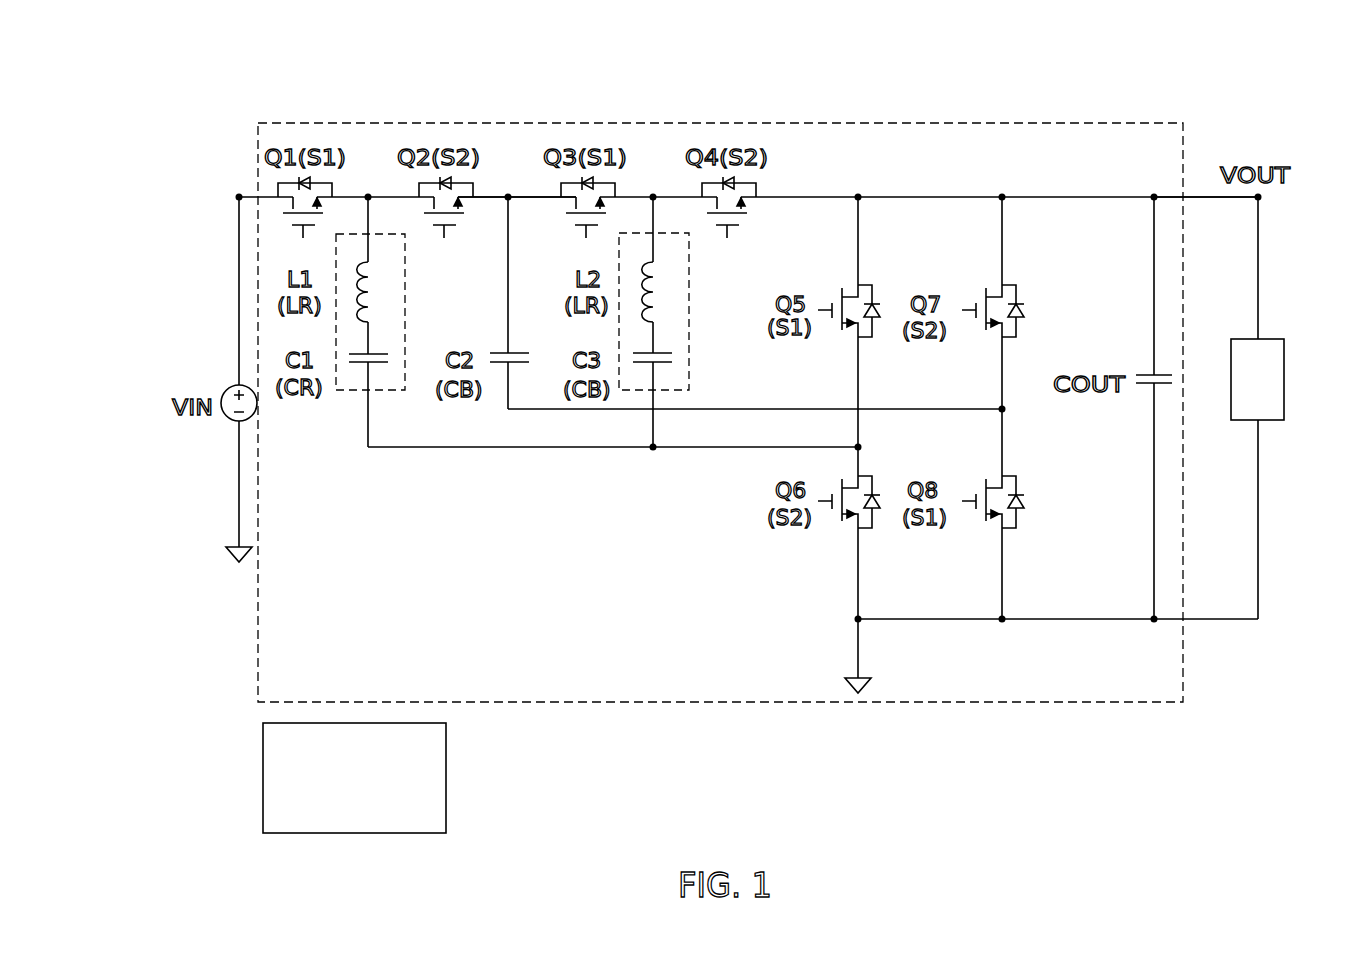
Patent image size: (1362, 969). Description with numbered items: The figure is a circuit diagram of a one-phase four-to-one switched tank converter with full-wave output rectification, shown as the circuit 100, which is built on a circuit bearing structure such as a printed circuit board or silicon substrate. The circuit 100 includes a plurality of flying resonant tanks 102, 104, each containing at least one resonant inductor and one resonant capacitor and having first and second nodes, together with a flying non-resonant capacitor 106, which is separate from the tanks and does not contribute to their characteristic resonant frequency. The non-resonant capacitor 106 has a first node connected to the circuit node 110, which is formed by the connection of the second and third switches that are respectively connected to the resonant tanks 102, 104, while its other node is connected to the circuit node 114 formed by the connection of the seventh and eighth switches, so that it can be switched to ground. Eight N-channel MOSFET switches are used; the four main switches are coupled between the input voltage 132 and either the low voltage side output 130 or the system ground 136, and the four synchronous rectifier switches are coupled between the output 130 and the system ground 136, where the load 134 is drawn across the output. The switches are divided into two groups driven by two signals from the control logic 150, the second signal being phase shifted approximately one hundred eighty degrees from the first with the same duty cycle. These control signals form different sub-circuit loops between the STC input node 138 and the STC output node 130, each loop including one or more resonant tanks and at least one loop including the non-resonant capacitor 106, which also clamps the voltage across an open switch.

The circuit 100 is at (285, 83).
The flying resonant tank 102 is at (406, 303).
The flying resonant tank 104 is at (690, 297).
The flying non-resonant capacitor 106 is at (512, 342).
The circuit node 110 is at (508, 194).
The circuit node 114 is at (1003, 410).
The low voltage side VOUT / STC output node 130 is at (1258, 153).
The input voltage VIN 132 is at (188, 425).
The load 134 is at (1287, 383).
The system ground 136 is at (856, 621).
The STC input node 138 is at (238, 195).
The control logic 150 is at (370, 822).